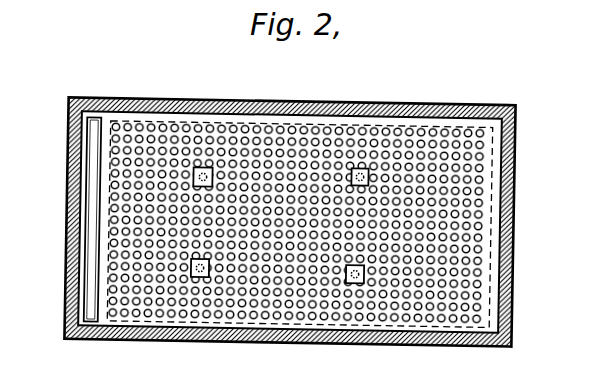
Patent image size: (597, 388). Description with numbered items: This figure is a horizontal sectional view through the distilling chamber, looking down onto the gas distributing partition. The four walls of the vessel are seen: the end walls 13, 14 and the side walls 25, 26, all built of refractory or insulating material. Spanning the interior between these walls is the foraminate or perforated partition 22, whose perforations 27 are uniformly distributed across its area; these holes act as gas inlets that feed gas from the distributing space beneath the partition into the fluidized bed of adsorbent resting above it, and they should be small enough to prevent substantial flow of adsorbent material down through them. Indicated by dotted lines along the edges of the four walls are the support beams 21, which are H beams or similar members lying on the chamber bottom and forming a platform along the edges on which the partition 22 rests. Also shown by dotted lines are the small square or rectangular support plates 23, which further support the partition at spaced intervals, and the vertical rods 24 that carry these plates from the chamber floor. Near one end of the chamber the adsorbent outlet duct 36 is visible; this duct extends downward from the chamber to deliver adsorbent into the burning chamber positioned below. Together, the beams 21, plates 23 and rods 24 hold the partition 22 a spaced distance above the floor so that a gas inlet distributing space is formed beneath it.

The end wall 13 is at (514, 236).
The end wall 14 is at (68, 226).
The support beams 21 is at (305, 106).
The perforated partition 22 is at (427, 291).
The support plates 23 is at (195, 168).
The vertical rods 24 is at (112, 181).
The wall 25 is at (447, 344).
The wall 26 is at (118, 101).
The perforations 27 is at (403, 142).
The adsorbent outlet duct 36 is at (90, 252).